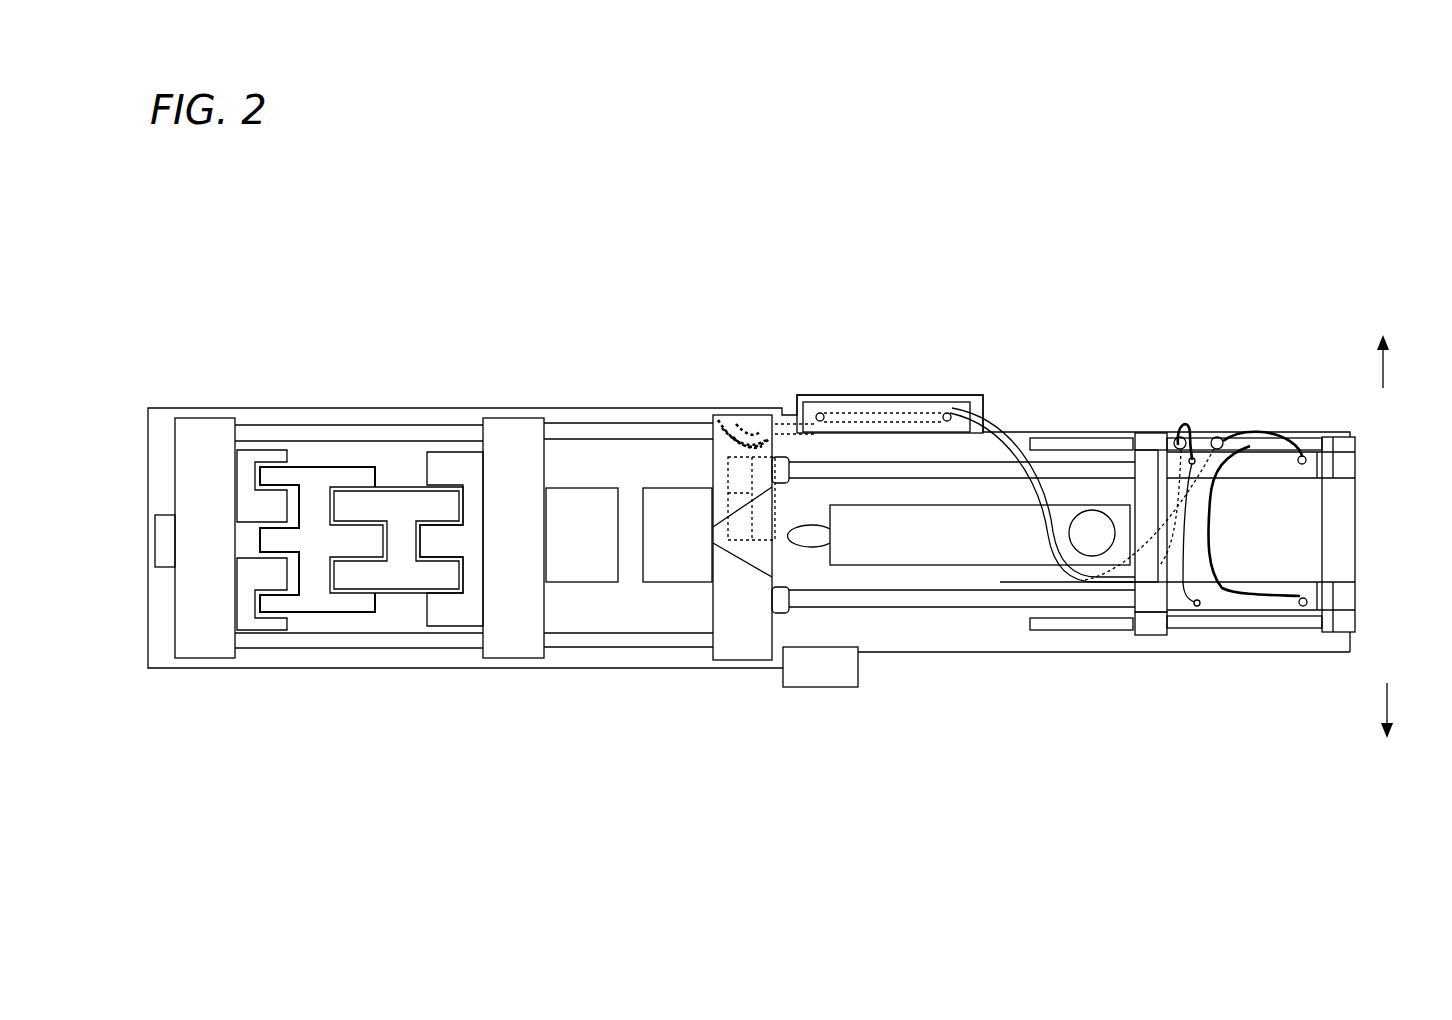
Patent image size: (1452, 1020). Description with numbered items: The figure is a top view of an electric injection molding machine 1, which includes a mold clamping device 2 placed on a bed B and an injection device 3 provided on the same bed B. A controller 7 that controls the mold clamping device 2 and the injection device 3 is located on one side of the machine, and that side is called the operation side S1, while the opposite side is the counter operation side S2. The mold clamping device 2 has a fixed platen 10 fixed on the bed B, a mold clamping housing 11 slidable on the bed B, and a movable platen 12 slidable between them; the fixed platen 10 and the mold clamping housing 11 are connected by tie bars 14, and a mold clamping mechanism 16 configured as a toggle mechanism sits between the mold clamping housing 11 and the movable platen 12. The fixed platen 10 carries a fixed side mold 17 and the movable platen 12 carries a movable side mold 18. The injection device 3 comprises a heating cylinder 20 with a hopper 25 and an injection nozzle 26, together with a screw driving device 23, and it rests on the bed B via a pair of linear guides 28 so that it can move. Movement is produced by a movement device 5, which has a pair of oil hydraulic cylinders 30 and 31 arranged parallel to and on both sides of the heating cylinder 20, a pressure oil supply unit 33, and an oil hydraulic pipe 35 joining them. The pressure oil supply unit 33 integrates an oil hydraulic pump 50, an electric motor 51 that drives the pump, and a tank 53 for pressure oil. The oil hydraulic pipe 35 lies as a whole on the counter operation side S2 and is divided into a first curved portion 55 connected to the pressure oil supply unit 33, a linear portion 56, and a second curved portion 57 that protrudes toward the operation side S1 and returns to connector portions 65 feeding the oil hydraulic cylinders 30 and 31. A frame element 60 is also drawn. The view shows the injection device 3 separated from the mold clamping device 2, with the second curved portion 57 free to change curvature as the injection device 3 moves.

The injection molding machine 1 is at (1329, 193).
The mold clamping device 2 is at (740, 290).
The injection device 3 is at (1326, 331).
The movement device 5 is at (1196, 329).
The controller 7 is at (818, 688).
The fixed platen 10 is at (745, 660).
The mold clamping housing 11 is at (213, 418).
The movable platen 12 is at (500, 418).
The tie bars 14 is at (412, 408).
The mold clamping mechanism 16 is at (322, 418).
The fixed side mold 17 is at (673, 583).
The movable side mold 18 is at (577, 583).
The heating cylinder 20 is at (983, 565).
The screw driving device 23 is at (1333, 527).
The hopper 25 is at (1088, 510).
The injection nozzle 26 is at (820, 547).
The linear guides 28 is at (1140, 433).
The oil hydraulic cylinder 30 is at (1306, 462).
The oil hydraulic cylinder 31 is at (1243, 595).
The pressure oil supply unit 33 is at (688, 497).
The oil hydraulic pipe 35 is at (1002, 355).
The oil hydraulic pump 50 is at (728, 505).
The electric motor 51 is at (774, 457).
The tank 53 is at (727, 473).
The first curved portion 55 is at (737, 414).
The linear portion 56 is at (893, 402).
The second curved portion 57 is at (1005, 447).
The sensor housing 60 is at (820, 396).
The connector portions 65 is at (1180, 437).
The bed B is at (444, 668).
The operation side S1 is at (1403, 710).
The counter operation side S2 is at (1400, 361).